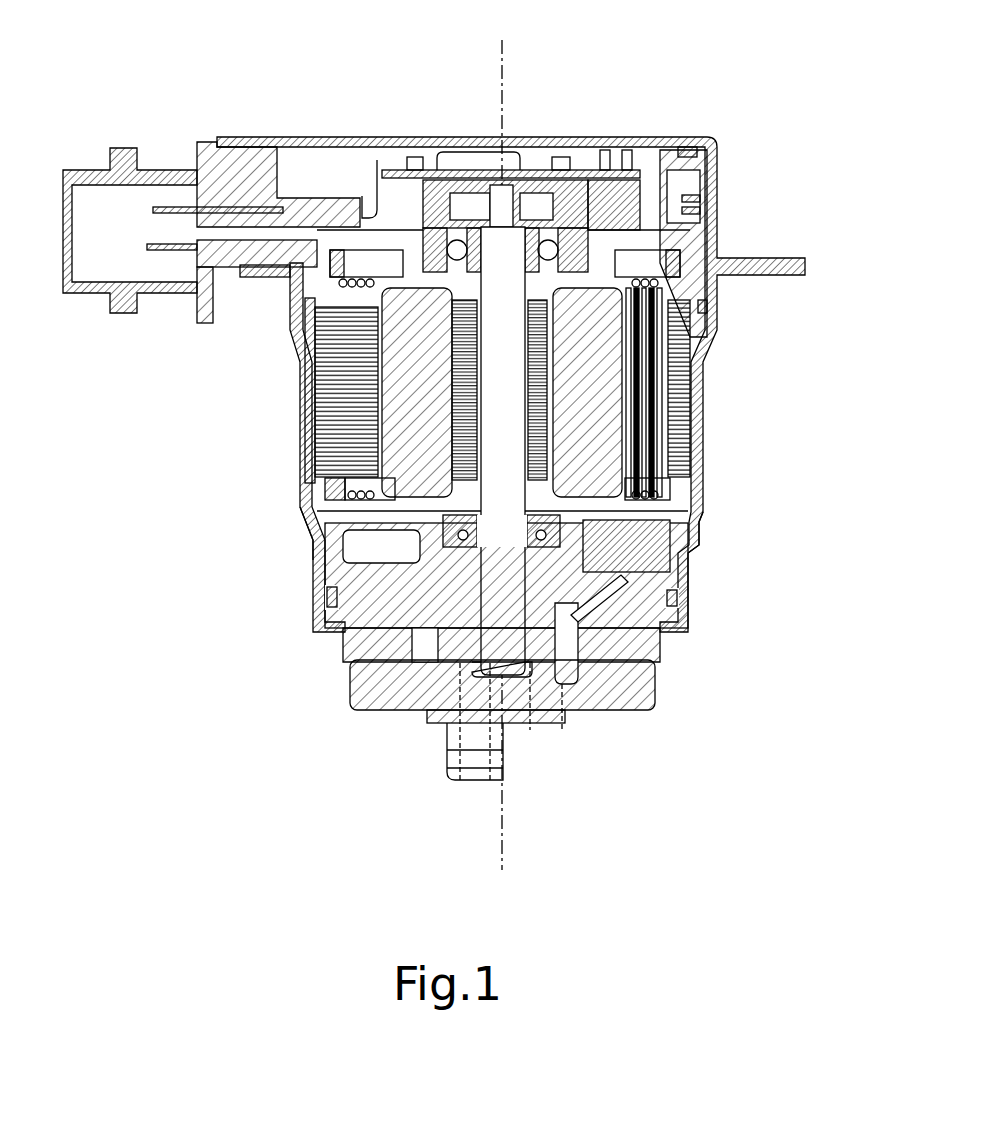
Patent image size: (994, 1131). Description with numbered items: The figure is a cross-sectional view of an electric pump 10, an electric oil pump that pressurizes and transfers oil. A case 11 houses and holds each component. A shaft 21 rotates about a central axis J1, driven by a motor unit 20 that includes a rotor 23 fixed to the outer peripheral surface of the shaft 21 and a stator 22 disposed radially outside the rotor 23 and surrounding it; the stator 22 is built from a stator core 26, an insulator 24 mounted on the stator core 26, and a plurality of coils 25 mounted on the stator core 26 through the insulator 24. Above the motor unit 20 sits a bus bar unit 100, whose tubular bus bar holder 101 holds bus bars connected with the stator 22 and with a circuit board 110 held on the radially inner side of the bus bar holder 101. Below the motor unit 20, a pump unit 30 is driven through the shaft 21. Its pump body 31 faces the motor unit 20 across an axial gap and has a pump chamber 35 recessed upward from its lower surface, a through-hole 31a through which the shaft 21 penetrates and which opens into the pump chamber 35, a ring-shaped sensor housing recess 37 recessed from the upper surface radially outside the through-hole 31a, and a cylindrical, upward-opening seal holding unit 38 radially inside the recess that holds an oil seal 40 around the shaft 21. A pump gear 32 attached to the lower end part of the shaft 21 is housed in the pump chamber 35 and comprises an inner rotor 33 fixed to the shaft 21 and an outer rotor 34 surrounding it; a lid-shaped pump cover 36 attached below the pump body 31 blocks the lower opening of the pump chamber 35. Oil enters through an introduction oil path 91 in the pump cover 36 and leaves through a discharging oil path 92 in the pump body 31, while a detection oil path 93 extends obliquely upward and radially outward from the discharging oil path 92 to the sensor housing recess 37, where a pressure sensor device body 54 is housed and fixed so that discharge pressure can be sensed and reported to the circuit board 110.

The electric pump 10 is at (684, 116).
The case 11 is at (722, 229).
The bus bar unit 100 is at (121, 141).
The bus bar holder 101 is at (207, 170).
The circuit board 110 is at (425, 145).
The central axis J1 is at (505, 80).
The motor unit 20 is at (296, 405).
The shaft 21 is at (488, 600).
The stator 22 is at (309, 448).
The rotor 23 is at (600, 405).
The insulator 24 is at (318, 490).
The coils 25 is at (296, 300).
The stator core 26 is at (305, 372).
The oil seal 40 is at (562, 492).
The pump unit 30 is at (300, 652).
The pump body 31 is at (669, 643).
The through-hole 31a is at (330, 600).
The pump gear 32 is at (604, 660).
The inner rotor 33 is at (547, 688).
The outer rotor 34 is at (581, 690).
The pump chamber 35 is at (418, 662).
The pump cover 36 is at (648, 702).
The sensor housing recess 37 is at (692, 527).
The seal holding unit 38 is at (413, 543).
The pressure sensor device body 54 is at (660, 546).
The introduction oil path 91 is at (447, 775).
The discharging oil path 92 is at (572, 705).
The detection oil path 93 is at (673, 600).